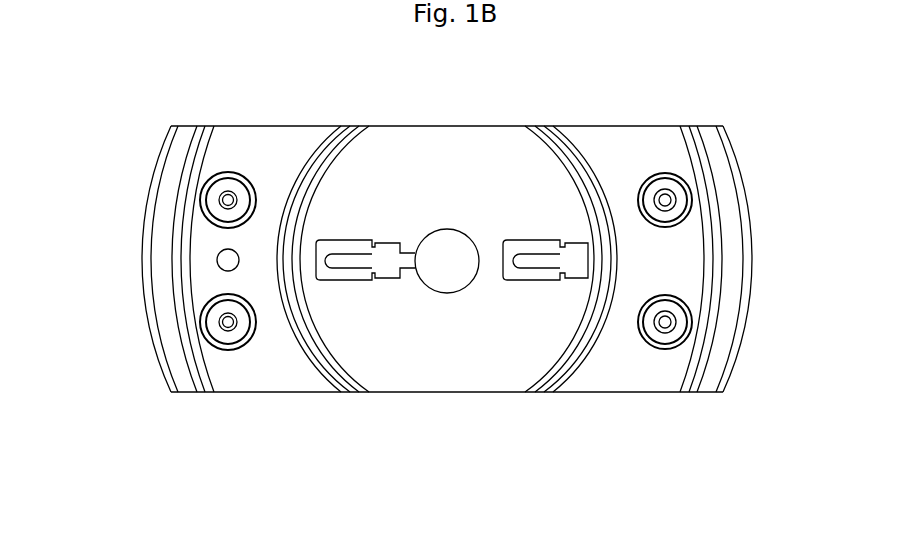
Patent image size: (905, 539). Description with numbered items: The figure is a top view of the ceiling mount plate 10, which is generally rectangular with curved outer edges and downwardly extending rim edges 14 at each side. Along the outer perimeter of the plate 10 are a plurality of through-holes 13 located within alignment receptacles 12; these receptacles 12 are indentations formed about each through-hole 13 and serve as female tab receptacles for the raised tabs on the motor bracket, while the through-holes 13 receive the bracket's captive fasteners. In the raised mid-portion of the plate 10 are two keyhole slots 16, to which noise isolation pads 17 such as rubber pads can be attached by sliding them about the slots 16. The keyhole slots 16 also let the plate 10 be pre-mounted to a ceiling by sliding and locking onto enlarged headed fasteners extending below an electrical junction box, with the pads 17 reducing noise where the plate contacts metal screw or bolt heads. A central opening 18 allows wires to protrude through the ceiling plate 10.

The ceiling mount plate 10 is at (146, 98).
The alignment receptacle 12 is at (225, 0).
The through-hole 13 is at (668, 199).
The rim edge 14 is at (148, 323).
The keyhole slot 16 is at (537, 266).
The noise isolation pad 17 is at (347, 247).
The central opening 18 is at (448, 293).